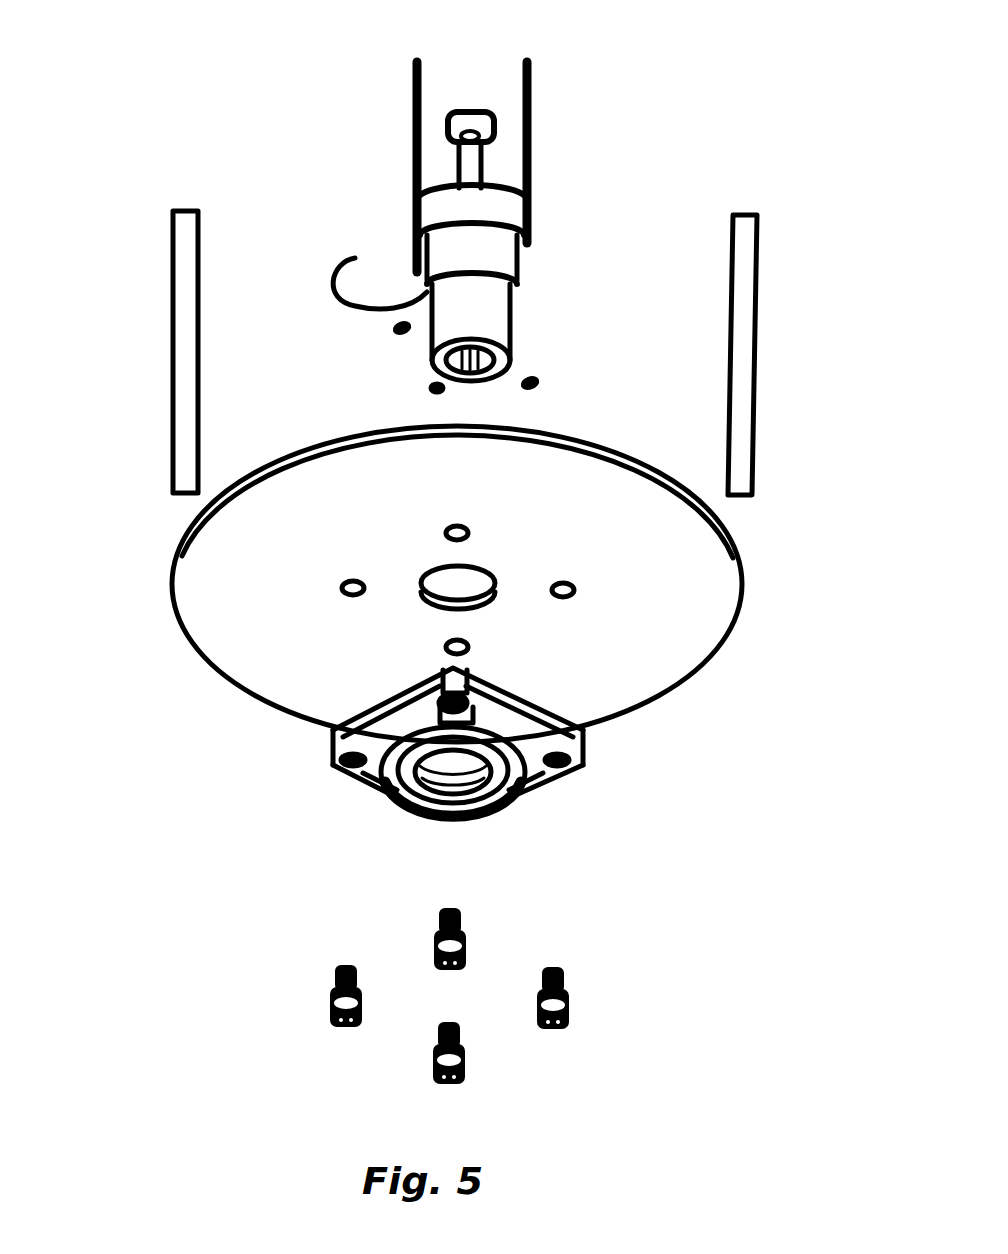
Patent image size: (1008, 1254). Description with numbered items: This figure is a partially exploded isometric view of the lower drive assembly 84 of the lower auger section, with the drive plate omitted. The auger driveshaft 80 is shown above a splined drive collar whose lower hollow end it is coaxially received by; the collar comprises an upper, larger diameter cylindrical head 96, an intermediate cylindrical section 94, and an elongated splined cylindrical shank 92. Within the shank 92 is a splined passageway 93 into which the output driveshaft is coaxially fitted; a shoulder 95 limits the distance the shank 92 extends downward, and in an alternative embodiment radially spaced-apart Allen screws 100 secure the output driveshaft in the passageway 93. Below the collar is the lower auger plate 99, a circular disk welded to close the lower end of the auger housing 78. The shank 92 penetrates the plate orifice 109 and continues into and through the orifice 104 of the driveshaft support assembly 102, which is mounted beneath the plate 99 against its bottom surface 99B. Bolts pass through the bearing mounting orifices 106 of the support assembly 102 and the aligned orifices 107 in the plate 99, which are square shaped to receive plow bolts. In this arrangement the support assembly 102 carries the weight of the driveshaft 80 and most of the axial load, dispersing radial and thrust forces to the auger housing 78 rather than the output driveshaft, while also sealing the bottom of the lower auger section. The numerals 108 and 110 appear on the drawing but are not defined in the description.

The auger housing 78 is at (175, 327).
The auger driveshaft 80 is at (530, 134).
The lower drive assembly 84 is at (113, 654).
The splined cylindrical shank 92 is at (500, 340).
The splined passageway 93 is at (473, 383).
The intermediate cylindrical section 94 is at (510, 263).
The shoulder 95 is at (380, 274).
The cylindrical head 96 is at (427, 217).
The lower auger plate 99 is at (720, 647).
The bottom surface 99B is at (628, 621).
The Allen screws 100 is at (432, 389).
The driveshaft support assembly 102 is at (589, 776).
The orifice 104 is at (437, 783).
The bearing mounting orifices 106 is at (467, 930).
The aligned orifices 107 is at (346, 588).
The bracket slots 108 is at (337, 767).
The plate orifice 109 is at (460, 583).
The fastener nut 110 is at (477, 107).